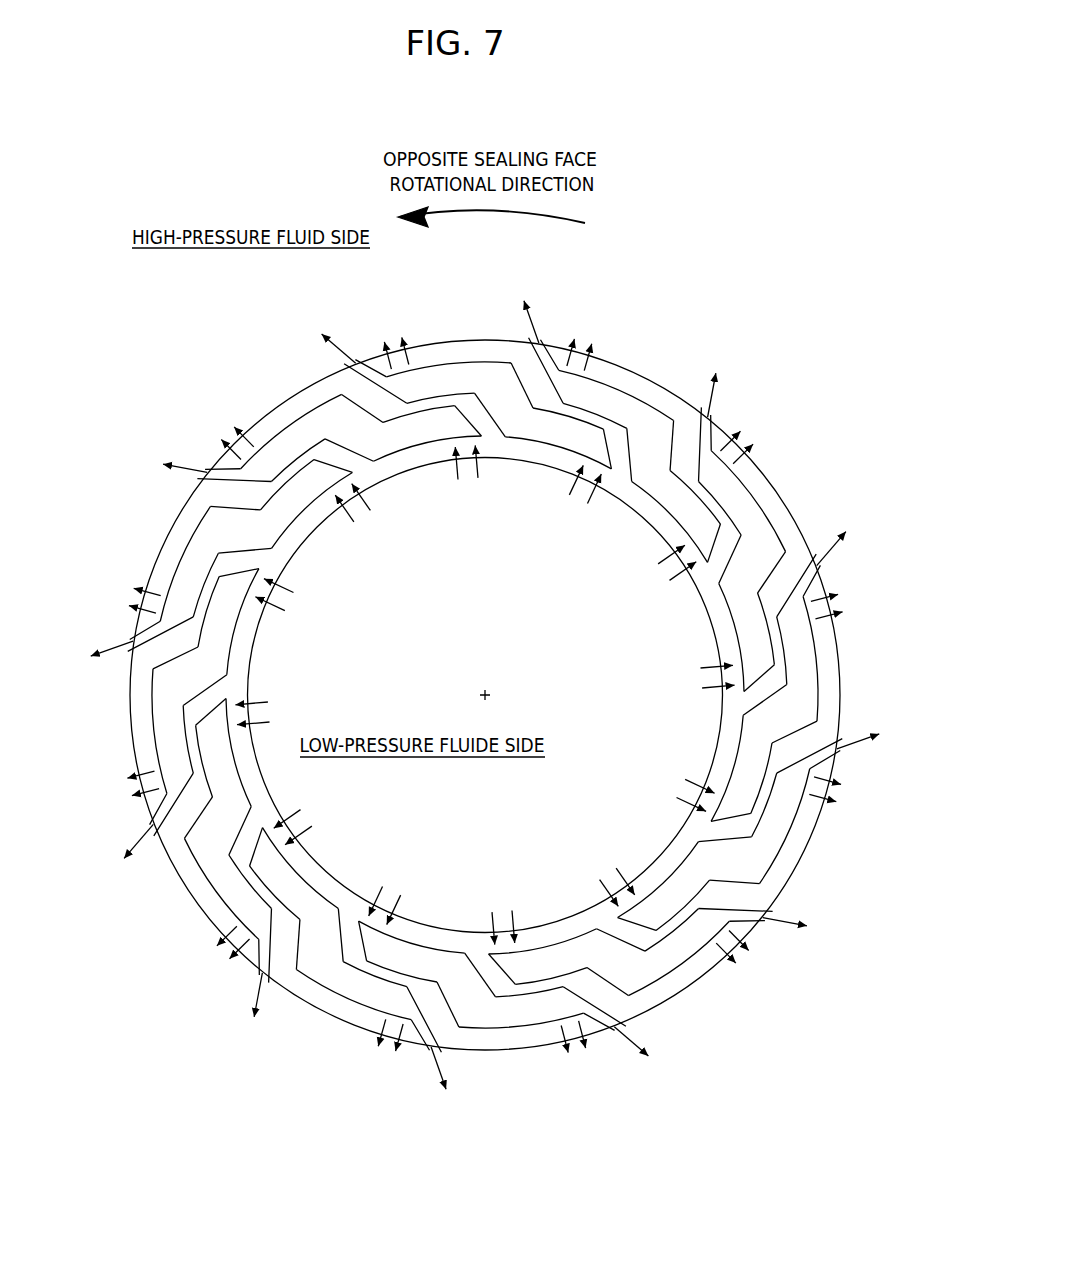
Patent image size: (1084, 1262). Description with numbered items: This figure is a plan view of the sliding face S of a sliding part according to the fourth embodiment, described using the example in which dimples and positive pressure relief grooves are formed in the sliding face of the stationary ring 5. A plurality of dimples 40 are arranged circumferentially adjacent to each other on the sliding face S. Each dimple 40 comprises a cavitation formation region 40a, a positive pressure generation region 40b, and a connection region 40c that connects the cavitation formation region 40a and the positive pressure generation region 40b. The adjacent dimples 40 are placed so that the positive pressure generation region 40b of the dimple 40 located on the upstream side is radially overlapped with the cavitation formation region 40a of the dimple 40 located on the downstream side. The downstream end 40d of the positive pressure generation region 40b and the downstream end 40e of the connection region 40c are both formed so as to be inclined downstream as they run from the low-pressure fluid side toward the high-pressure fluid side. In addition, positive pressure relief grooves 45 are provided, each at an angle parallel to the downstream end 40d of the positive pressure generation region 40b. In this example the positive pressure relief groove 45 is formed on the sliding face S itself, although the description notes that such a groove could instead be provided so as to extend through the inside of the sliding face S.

The stationary ring 5 is at (672, 402).
The sliding face S is at (708, 392).
The dimple 40 is at (498, 674).
The cavitation formation region 40a is at (445, 440).
The positive pressure generation region 40b is at (420, 348).
The connection region 40c is at (528, 412).
The downstream end of the positive pressure generation region 40d is at (400, 392).
The downstream end of the connection region 40e is at (365, 485).
The positive pressure relief groove 45 is at (346, 362).